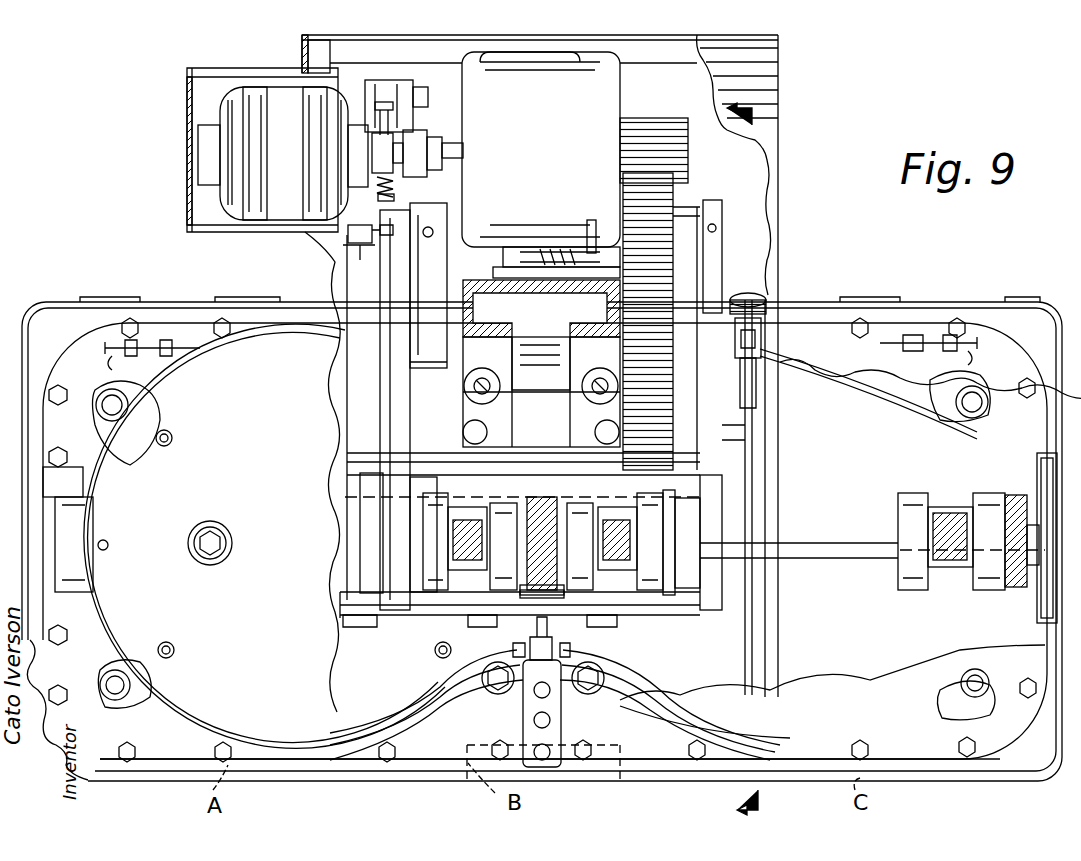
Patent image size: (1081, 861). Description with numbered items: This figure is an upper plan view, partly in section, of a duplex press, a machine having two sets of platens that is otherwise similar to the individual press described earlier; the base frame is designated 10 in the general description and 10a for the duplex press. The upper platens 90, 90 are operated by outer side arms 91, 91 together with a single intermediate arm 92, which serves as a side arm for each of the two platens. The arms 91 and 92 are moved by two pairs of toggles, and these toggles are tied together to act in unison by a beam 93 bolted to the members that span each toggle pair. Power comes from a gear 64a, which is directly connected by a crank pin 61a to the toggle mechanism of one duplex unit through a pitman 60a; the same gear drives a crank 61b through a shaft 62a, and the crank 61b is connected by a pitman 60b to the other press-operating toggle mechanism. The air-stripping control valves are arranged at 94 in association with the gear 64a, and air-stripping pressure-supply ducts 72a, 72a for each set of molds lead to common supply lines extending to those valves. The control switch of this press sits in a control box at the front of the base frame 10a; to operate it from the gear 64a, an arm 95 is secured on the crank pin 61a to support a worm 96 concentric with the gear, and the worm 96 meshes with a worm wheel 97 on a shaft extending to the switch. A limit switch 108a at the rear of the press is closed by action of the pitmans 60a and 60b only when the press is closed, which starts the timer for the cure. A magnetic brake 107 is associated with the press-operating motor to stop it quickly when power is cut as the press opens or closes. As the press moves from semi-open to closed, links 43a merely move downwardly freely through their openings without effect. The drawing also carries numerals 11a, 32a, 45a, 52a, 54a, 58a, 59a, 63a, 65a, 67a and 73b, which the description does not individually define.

The base frame 10 is at (760, 459).
The base frame 10a is at (1006, 768).
The housing flange 11a is at (913, 753).
The bearing cap 32a is at (1040, 600).
The link 43a is at (473, 392).
The roller bracket 45a is at (515, 400).
The bearing 52a is at (468, 507).
The collar 54a is at (437, 496).
The frame plate 58a is at (365, 515).
The base plate 59a is at (395, 600).
The pitman 60a is at (712, 425).
The pitman 60b is at (390, 360).
The crank pin 61a is at (700, 205).
The crank 61b is at (428, 290).
The shaft 62a is at (541, 360).
The roller 63a is at (465, 384).
The gear 64a is at (675, 192).
The pinion 65a is at (690, 150).
The motor 67a is at (255, 225).
The air-stripping pressure-supply duct 72a is at (440, 698).
The bracket 73b is at (628, 600).
The upper platen 90 is at (210, 385).
The outer side arm 91 is at (1043, 497).
The intermediate arm 92 is at (560, 498).
The beam 93 is at (755, 440).
The air-stripping control valves 94 is at (587, 220).
The arm 95 is at (722, 278).
The worm 96 is at (735, 375).
The worm wheel 97 is at (766, 296).
The magnetic brake 107 is at (414, 112).
The limit switch 108a is at (358, 262).